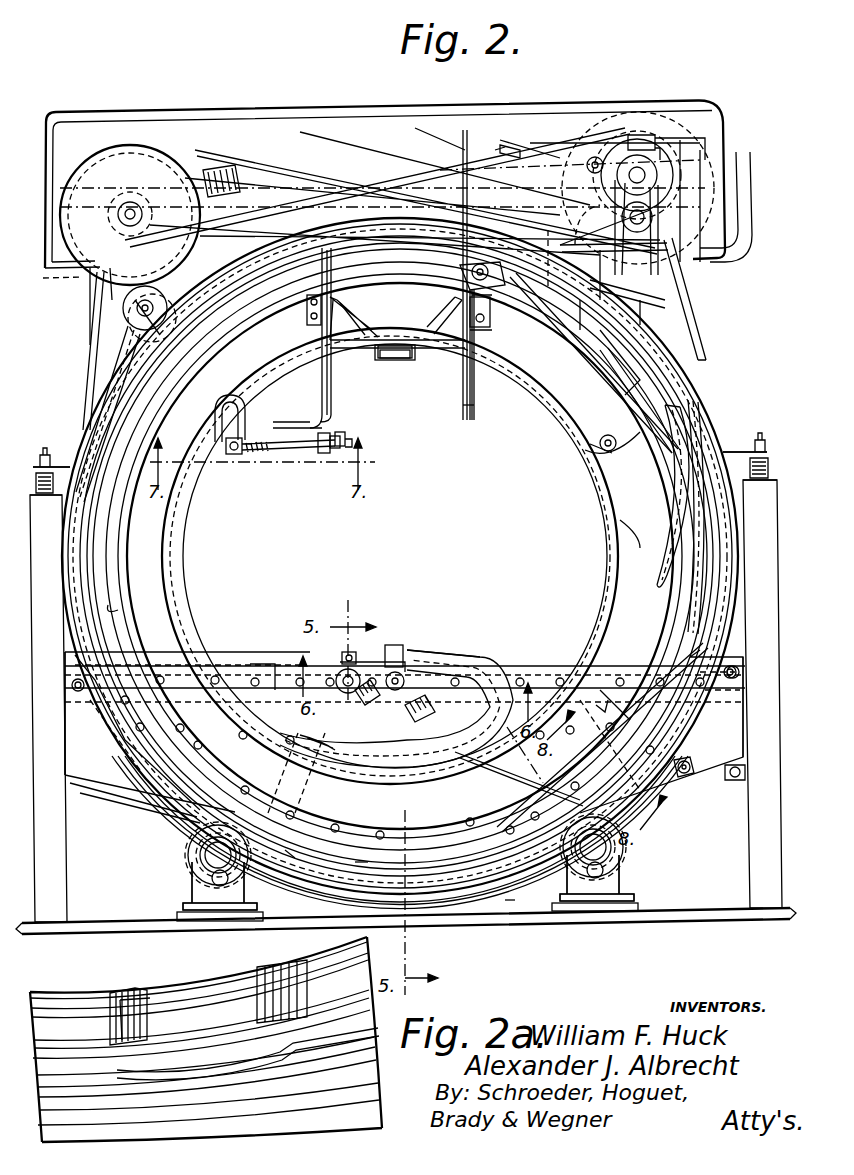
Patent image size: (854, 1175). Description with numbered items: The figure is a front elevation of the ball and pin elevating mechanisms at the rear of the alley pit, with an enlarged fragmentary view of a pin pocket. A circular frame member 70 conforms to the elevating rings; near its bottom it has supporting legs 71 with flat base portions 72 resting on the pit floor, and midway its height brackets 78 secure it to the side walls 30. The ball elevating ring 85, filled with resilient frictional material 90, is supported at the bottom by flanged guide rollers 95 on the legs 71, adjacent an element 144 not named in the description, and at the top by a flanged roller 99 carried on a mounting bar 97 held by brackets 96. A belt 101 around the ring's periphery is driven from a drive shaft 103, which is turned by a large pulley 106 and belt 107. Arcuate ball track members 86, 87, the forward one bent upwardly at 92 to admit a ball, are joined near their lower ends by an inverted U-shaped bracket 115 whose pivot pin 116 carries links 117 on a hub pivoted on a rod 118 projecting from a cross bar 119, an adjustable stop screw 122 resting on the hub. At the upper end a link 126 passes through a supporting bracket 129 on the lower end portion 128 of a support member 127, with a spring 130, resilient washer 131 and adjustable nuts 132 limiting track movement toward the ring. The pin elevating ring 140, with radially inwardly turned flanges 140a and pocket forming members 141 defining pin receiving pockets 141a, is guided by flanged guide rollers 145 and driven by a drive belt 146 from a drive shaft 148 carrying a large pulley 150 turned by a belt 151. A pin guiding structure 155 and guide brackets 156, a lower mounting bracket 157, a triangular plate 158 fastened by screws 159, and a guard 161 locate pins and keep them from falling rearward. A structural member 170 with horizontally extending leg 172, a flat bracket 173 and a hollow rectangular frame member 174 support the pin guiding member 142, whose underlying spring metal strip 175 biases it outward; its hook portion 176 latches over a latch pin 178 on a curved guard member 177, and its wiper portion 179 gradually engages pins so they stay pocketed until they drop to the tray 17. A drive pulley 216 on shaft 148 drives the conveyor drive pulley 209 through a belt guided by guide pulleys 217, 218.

In FIG. 2, the tray 17 is at (390, 322).
In FIG. 2, the side walls 30 is at (37, 510).
In FIG. 2, the circular frame member 70 is at (452, 905).
In FIG. 2, the supporting legs 71 is at (193, 898).
In FIG. 2, the flat base portion 72 is at (180, 916).
In FIG. 2, the brackets 78 is at (62, 466).
In FIG. 2, the ball elevating ring 85 is at (288, 853).
In FIG. 2, the ball track member 86 is at (170, 525).
In FIG. 2, the ball track member 87 is at (473, 657).
In FIG. 2, the resilient frictional material 90 is at (360, 862).
In FIG. 2, the upwardly bent portion 92 is at (333, 748).
In FIG. 2, the flanged guide rollers 95 is at (200, 851).
In FIG. 2, the brackets 96 is at (123, 296).
In FIG. 2, the mounting bar 97 is at (667, 243).
In FIG. 2, the flanged roller 99 is at (123, 317).
In FIG. 2, the belt 101 is at (93, 345).
In FIG. 2, the drive shaft 103 is at (130, 202).
In FIG. 2, the large pulley 106 is at (97, 163).
In FIG. 2, the belt 107 is at (193, 155).
In FIG. 2, the inverted U-shaped bracket 115 is at (400, 653).
In FIG. 2, the pivot pin 116 is at (387, 645).
In FIG. 2, the links 117 is at (370, 690).
In FIG. 2, the rod 118 is at (340, 676).
In FIG. 2, the cross bar 119 is at (260, 666).
In FIG. 2, the adjustable stop screw 122 is at (343, 653).
In FIG. 2, the link 126 is at (283, 455).
In FIG. 2, the support member 127 is at (318, 377).
In FIG. 2, the lower end portion 128 is at (300, 405).
In FIG. 2, the supporting bracket 129 is at (333, 430).
In FIG. 2, the spring 130 is at (250, 457).
In FIG. 2, the resilient washer 131 is at (333, 457).
In FIG. 2, the adjustable nuts 132 is at (345, 436).
In FIG. 2, the pin elevating ring 140 is at (333, 900).
In FIG. 2A, the pin elevating ring 140 is at (240, 1028).
In FIG. 2, the radially inwardly turned flanges 140a is at (510, 900).
In FIG. 2A, the radially inwardly turned flanges 140a is at (152, 998).
In FIG. 2, the pocket forming members 141 is at (107, 615).
In FIG. 2A, the pocket forming members 141 is at (120, 1077).
In FIG. 2, the pin receiving pockets 141a is at (87, 633).
In FIG. 2A, the pin receiving pockets 141a is at (203, 1033).
In FIG. 2, the pin guiding member 142 is at (617, 380).
In FIG. 2, the bearing 144 is at (200, 880).
In FIG. 2, the flanged guide rollers 145 is at (83, 373).
In FIG. 2, the drive belt 146 is at (697, 323).
In FIG. 2, the drive shaft 148 is at (650, 173).
In FIG. 2, the large pulley 150 is at (672, 112).
In FIG. 2, the belt 151 is at (430, 143).
In FIG. 2, the pin guiding structure 155 is at (600, 710).
In FIG. 2, the guide brackets 156 is at (68, 658).
In FIG. 2, the lower mounting bracket 157 is at (688, 763).
In FIG. 2, the triangular plate 158 is at (627, 717).
In FIG. 2, the screws 159 is at (737, 672).
In FIG. 2, the guard 161 is at (248, 759).
In FIG. 2, the structural member 170 is at (553, 357).
In FIG. 2, the horizontally extending leg 172 is at (442, 346).
In FIG. 2, the flat bracket 173 is at (513, 333).
In FIG. 2, the hollow rectangular frame member 174 is at (493, 328).
In FIG. 2, the spring metal strip 175 is at (610, 383).
In FIG. 2, the hook portion 176 is at (620, 457).
In FIG. 2, the curved guard member 177 is at (633, 535).
In FIG. 2, the latch pin 178 is at (603, 443).
In FIG. 2, the wiper portion 179 is at (663, 560).
In FIG. 2, the drive pulley 209 is at (478, 405).
In FIG. 2, the drive pulley 216 is at (660, 142).
In FIG. 2, the guide pulley 217 is at (505, 147).
In FIG. 2, the guide pulley 218 is at (460, 273).